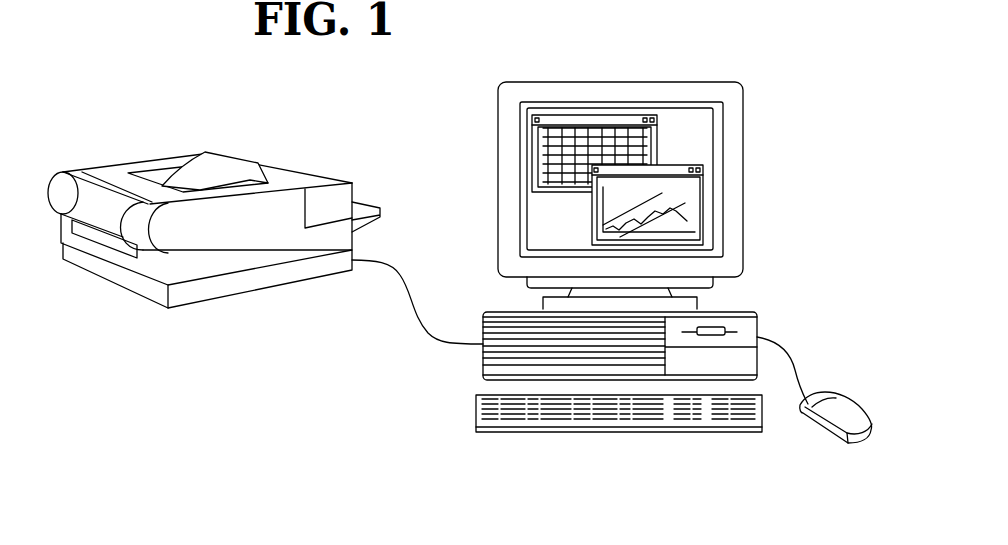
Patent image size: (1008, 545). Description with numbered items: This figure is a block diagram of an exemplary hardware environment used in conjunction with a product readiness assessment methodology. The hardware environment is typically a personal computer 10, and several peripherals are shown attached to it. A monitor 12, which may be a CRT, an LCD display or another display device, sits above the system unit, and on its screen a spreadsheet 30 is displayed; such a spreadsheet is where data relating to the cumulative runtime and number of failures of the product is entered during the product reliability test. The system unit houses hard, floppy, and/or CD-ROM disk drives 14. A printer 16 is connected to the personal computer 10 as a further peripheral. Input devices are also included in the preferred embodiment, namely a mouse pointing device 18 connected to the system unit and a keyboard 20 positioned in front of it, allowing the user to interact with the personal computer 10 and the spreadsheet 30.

The personal computer 10 is at (807, 78).
The monitor 12 is at (688, 82).
The disk drives 14 is at (716, 325).
The printer 16 is at (294, 171).
The mouse pointing device 18 is at (853, 402).
The keyboard 20 is at (708, 432).
The spreadsheet 30 is at (570, 137).